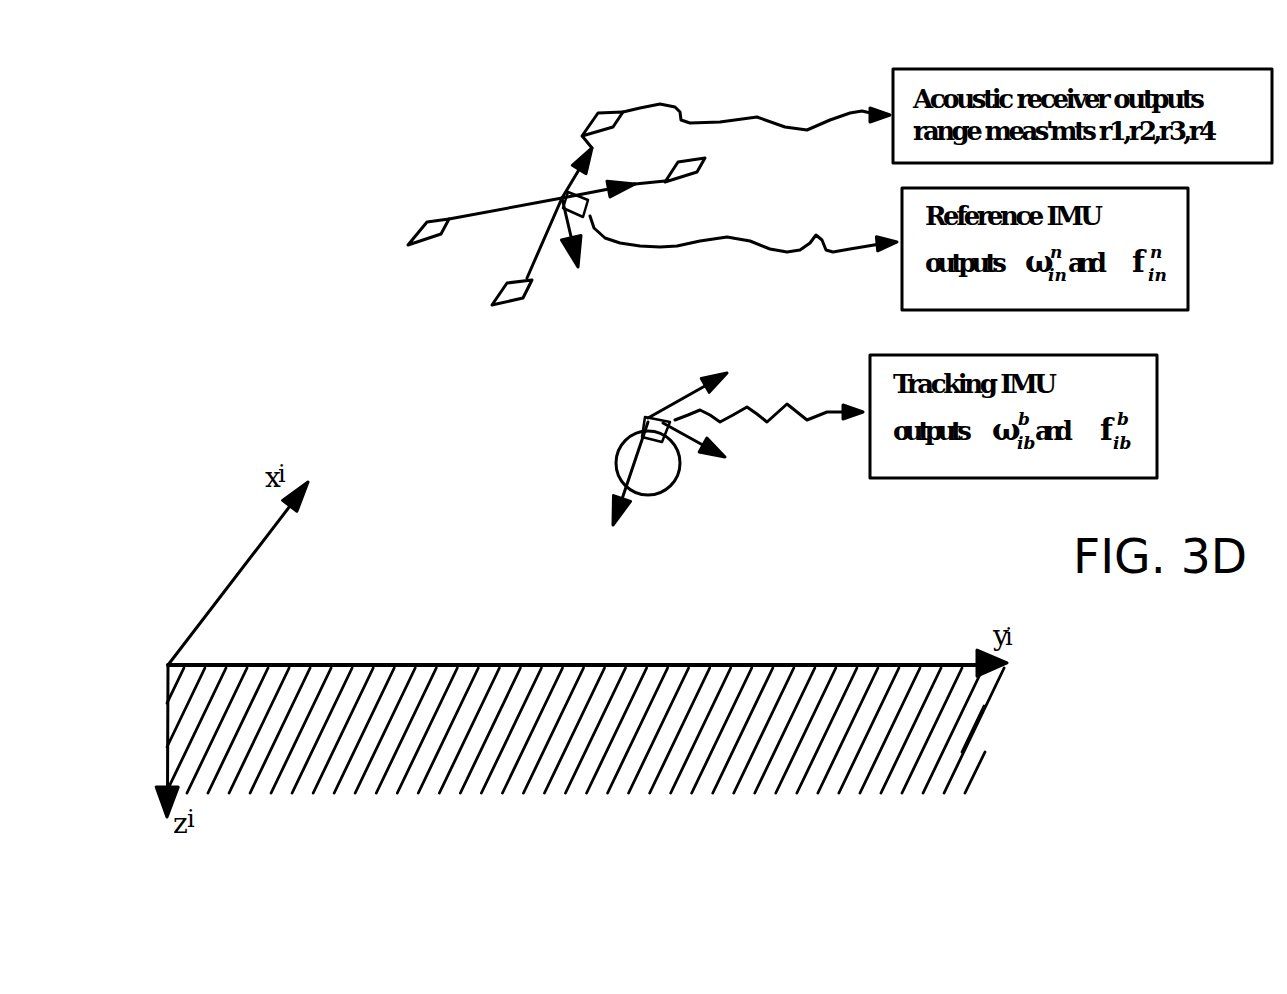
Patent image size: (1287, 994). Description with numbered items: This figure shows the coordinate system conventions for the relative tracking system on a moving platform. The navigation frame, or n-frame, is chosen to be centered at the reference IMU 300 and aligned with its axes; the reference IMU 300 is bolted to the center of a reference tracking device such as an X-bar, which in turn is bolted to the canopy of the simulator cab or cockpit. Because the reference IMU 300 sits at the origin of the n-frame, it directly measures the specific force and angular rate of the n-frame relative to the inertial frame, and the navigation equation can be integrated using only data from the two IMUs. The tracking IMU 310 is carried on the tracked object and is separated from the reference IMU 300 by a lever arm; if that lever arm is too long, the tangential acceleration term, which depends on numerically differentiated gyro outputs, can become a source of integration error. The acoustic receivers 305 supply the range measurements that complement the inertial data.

The reference IMU 300 is at (550, 208).
The acoustic receivers 305 is at (556, 192).
The tracking IMU 310 is at (636, 426).